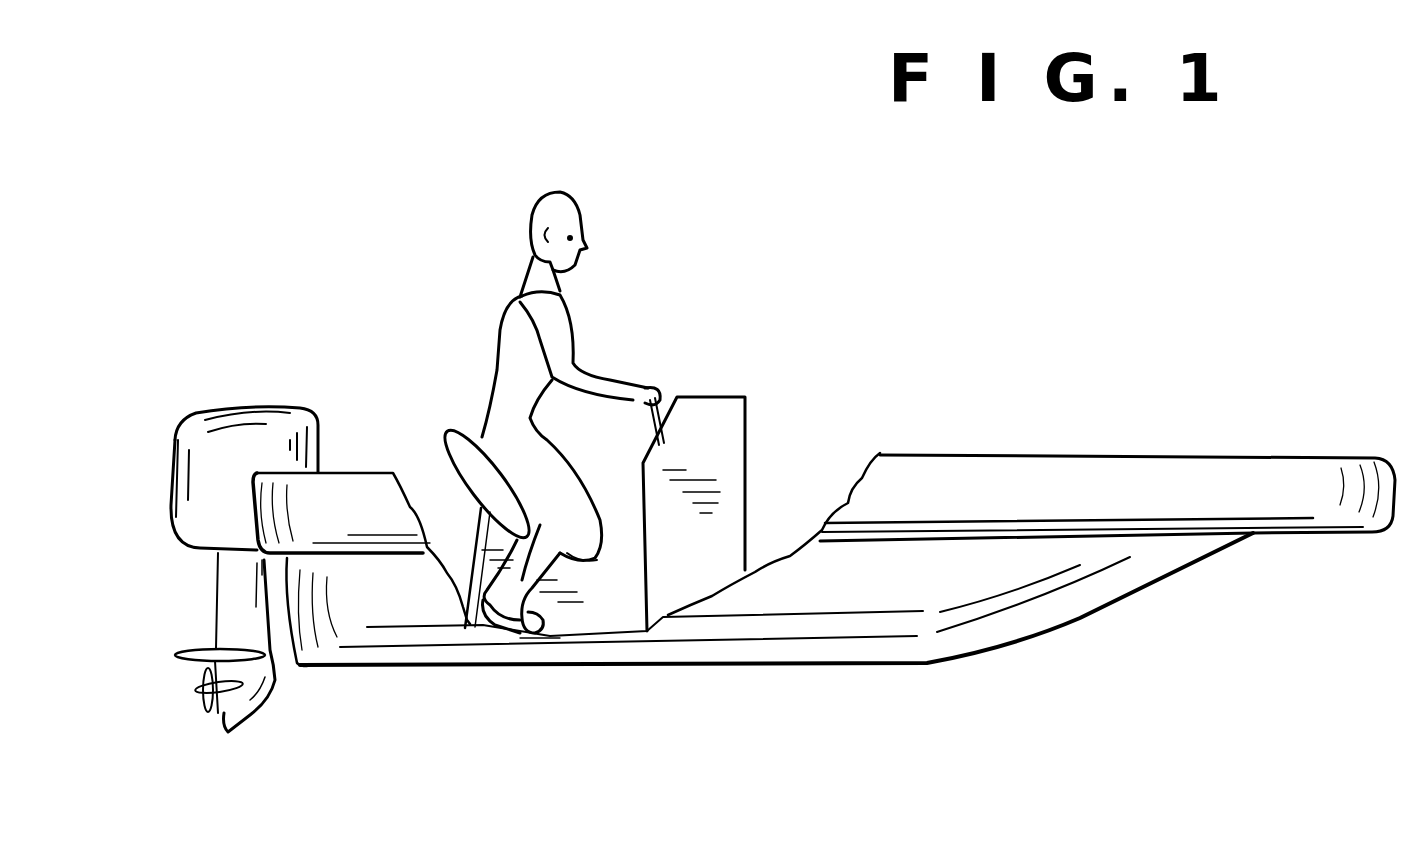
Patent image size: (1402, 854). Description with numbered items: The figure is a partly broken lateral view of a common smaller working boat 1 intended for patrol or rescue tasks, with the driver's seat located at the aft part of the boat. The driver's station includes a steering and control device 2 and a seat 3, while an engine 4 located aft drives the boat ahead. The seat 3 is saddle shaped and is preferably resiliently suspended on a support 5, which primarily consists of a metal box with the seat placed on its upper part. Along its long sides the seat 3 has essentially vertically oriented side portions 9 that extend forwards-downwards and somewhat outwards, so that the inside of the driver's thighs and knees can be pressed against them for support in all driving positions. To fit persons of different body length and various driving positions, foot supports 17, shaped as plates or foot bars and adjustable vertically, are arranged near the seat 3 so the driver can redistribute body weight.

The working boat 1 is at (1035, 452).
The steering and control device 2 is at (670, 387).
The seat 3 is at (450, 427).
The engine 4 is at (222, 478).
The support 5 is at (567, 620).
The side portions 9 is at (517, 499).
The foot supports 17 is at (522, 623).